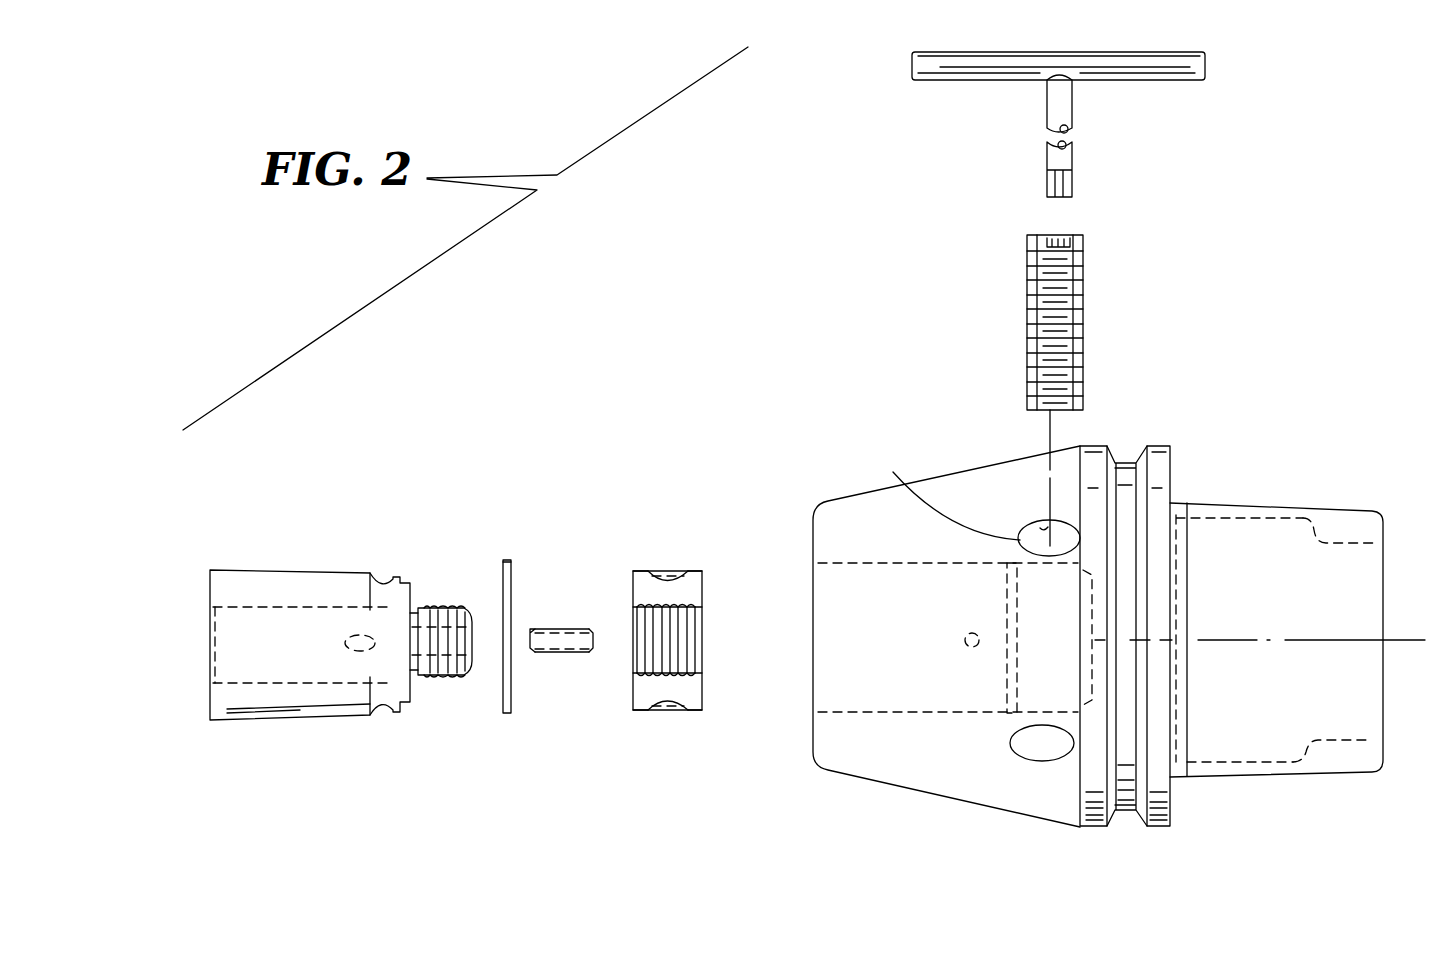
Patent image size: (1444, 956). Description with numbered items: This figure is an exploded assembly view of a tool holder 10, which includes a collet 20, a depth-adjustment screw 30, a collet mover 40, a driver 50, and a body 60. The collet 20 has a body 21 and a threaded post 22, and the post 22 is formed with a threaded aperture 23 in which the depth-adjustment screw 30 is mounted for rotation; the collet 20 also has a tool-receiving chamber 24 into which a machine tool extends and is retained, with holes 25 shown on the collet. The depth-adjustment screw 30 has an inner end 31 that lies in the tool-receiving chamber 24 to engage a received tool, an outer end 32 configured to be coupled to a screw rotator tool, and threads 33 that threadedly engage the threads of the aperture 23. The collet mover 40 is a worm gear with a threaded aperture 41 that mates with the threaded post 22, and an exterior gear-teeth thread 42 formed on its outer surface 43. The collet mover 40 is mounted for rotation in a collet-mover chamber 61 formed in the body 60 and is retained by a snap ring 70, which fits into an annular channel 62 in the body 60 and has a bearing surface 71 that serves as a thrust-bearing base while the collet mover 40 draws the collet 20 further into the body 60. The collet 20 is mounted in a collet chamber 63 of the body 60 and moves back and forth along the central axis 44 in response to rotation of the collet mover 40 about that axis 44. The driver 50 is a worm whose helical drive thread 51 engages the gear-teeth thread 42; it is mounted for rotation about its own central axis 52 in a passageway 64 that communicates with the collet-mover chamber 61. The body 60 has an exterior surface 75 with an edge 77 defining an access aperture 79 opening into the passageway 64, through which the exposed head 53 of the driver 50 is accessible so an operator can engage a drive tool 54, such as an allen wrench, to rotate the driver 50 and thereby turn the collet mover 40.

The tool holder 10 is at (806, 393).
The collet 20 is at (343, 545).
The body 21 is at (277, 728).
The threaded post 22 is at (457, 690).
The threaded aperture 23 is at (475, 640).
The tool-receiving chamber 24 is at (255, 637).
The cross holes 25 is at (310, 604).
The depth-adjustment screw 30 is at (582, 603).
The inner end 31 is at (530, 652).
The outer end 32 is at (603, 640).
The threads 33 is at (574, 656).
The collet mover 40 is at (668, 556).
The threaded aperture 41 is at (679, 611).
The exterior gear-teeth thread 42 is at (673, 569).
The outer surface 43 is at (679, 571).
The central axis 44 is at (1242, 639).
The driver 50 is at (1126, 320).
The helical drive thread 51 is at (1077, 326).
The central axis 52 is at (1082, 244).
The exposed head 53 is at (1085, 237).
The drive tool 54 is at (1079, 162).
The body 60 is at (1218, 433).
The collet-mover chamber 61 is at (1057, 677).
The annular channel 62 is at (1001, 695).
The collet chamber 63 is at (896, 657).
The passageway 64 is at (1048, 522).
The snap ring 70 is at (510, 698).
The bearing surface 71 is at (512, 572).
The exterior surface 75 is at (965, 469).
The edge 77 is at (1036, 541).
The access aperture 79 is at (893, 472).